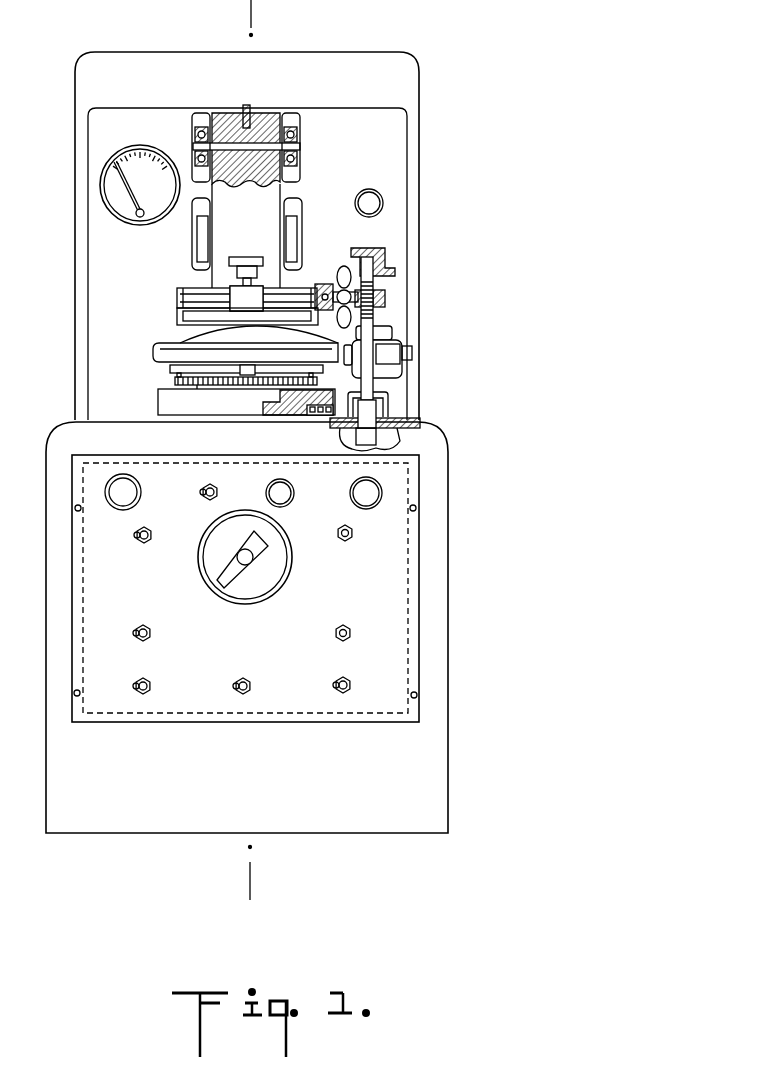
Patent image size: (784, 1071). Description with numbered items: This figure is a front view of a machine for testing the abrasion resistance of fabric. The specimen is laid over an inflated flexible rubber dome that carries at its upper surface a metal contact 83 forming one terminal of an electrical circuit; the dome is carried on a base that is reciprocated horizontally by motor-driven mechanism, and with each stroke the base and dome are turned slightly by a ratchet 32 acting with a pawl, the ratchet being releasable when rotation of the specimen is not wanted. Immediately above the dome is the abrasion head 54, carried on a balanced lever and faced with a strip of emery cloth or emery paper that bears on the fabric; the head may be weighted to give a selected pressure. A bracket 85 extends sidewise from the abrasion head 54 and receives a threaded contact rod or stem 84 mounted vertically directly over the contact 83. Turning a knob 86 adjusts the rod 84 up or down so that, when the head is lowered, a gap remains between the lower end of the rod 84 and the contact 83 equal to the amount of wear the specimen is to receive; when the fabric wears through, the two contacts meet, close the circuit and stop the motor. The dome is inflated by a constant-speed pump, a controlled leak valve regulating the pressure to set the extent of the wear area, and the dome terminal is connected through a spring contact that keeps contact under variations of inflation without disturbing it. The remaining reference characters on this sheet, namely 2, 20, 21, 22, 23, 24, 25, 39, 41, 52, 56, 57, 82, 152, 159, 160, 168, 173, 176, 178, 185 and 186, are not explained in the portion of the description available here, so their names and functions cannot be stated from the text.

The section line 2- 2 is at (246, 14).
The housing 20 is at (443, 705).
The control panel 21 is at (402, 652).
The bracket 22 is at (390, 412).
The support block 23 is at (282, 417).
The base 24 is at (165, 402).
The insert 25 is at (322, 415).
The ratchet 32 is at (170, 370).
The dome cover 39 is at (190, 334).
The plate 41 is at (158, 354).
The gauge 52 is at (113, 189).
The abrasion head 54 is at (200, 313).
The guide 56 is at (292, 232).
The spindle 57 is at (296, 167).
The indicator body 82 is at (390, 369).
The contact 83 is at (395, 437).
The contact rod 84 is at (368, 335).
The bracket 85 is at (385, 298).
The knob 86 is at (360, 250).
The switch 152 is at (148, 626).
The switch 159 is at (141, 545).
The control knob 160 is at (288, 567).
The indicator lamp 168 is at (112, 506).
The switch 173 is at (250, 680).
The switch 176 is at (341, 627).
The switch 178 is at (345, 541).
The switch 185 is at (150, 682).
The switch 186 is at (352, 683).